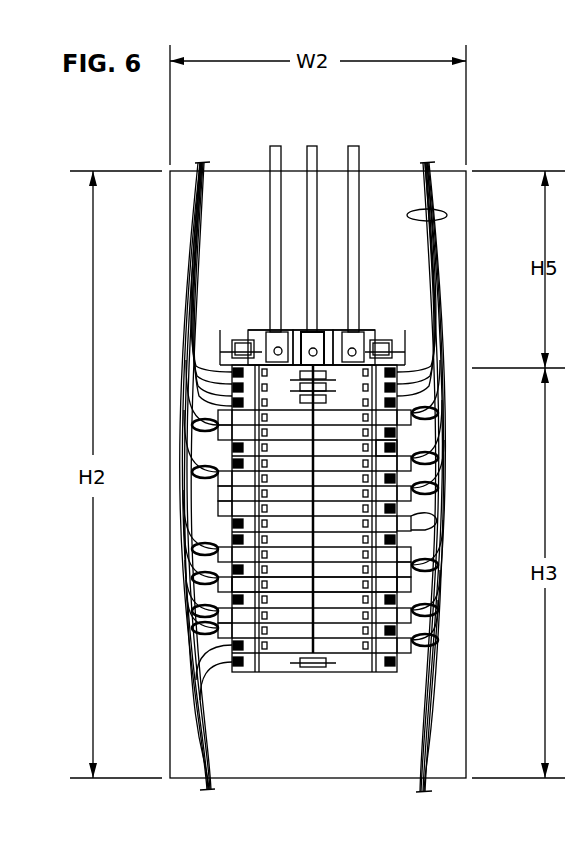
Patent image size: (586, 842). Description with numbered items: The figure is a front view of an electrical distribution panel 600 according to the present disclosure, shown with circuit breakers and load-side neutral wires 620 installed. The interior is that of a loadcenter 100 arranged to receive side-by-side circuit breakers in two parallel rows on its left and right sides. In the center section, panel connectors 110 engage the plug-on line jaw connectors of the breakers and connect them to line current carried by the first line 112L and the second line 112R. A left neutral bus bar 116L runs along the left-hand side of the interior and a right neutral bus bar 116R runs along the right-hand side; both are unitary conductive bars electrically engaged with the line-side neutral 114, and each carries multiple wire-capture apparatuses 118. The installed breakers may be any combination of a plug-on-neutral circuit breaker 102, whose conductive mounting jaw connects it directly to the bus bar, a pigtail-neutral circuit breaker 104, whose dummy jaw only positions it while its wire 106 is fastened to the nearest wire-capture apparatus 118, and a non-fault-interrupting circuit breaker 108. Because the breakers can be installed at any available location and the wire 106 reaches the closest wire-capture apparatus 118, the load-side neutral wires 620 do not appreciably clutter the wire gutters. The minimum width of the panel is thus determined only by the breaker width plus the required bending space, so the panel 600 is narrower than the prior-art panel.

The loadcenter 100 is at (363, 510).
The plug-on-neutral circuit breaker 102 is at (411, 591).
The pigtail-neutral circuit breaker 104 is at (425, 507).
The wire 106 is at (440, 480).
The non-fault-interrupting circuit breaker 108 is at (395, 443).
The panel connectors 110 is at (326, 388).
The first line 112L is at (268, 153).
The second line 112R is at (360, 152).
The line-side neutral 114 is at (320, 148).
The left neutral bus bar 116L is at (242, 340).
The right neutral bus bar 116R is at (383, 340).
The wire-capture apparatus 118 is at (237, 664).
The electrical distribution panel 600 is at (482, 125).
The load-side neutral wires 620 is at (447, 216).